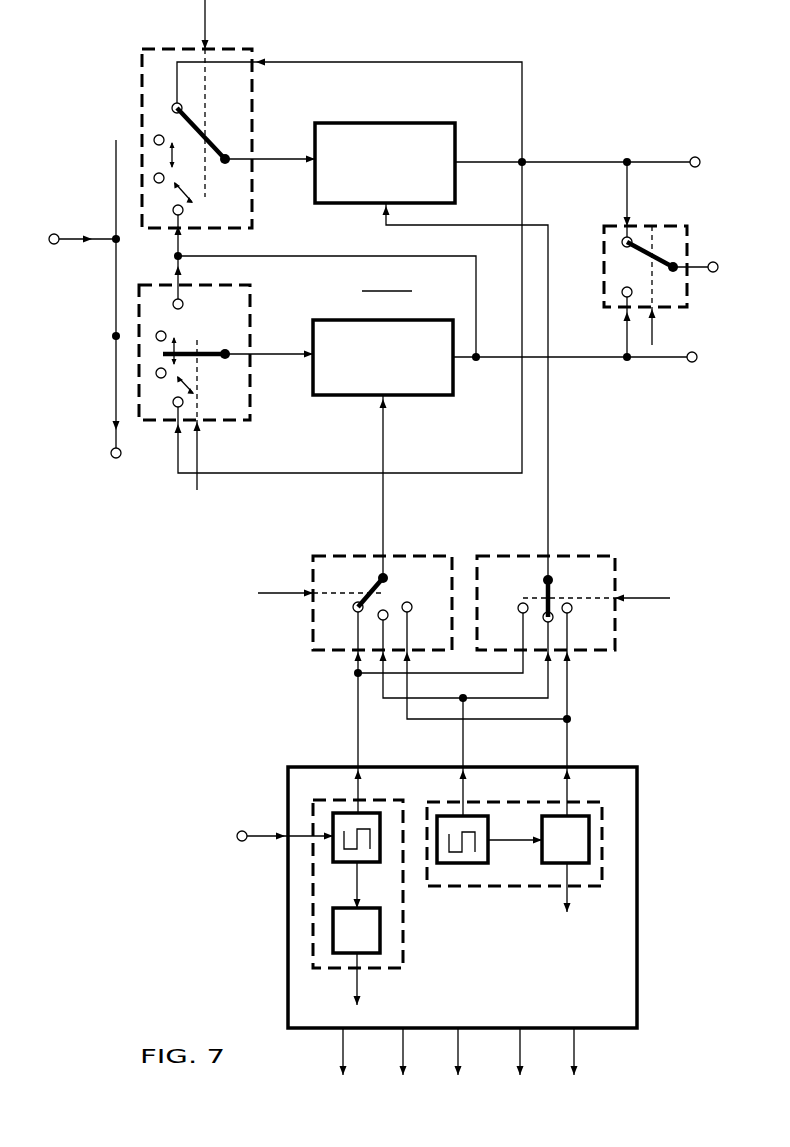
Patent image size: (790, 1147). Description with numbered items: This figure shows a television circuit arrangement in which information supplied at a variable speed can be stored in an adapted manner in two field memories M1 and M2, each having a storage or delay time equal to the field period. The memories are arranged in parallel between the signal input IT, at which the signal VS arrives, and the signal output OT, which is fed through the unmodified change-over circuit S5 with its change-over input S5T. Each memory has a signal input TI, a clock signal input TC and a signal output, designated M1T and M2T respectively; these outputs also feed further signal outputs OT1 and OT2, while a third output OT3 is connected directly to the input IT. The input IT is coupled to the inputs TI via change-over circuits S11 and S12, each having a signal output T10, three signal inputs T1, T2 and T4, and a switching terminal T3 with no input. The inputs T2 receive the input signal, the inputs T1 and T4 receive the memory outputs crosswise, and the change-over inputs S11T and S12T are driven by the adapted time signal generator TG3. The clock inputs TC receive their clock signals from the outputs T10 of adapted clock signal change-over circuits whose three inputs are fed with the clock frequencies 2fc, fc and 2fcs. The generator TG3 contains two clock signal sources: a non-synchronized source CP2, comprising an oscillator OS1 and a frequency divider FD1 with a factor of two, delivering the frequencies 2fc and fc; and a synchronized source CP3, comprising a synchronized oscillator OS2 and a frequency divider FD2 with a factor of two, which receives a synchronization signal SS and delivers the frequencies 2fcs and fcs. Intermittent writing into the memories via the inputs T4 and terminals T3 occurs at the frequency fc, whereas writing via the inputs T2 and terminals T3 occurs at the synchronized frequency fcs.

The change-over circuit S11 is at (141, 60).
The change-over input S11T is at (208, 49).
The change-over circuit S12 is at (139, 300).
The change-over input S12T is at (200, 425).
The change-over circuit S5 is at (604, 240).
The control signal for switch S5 S5T is at (655, 312).
The field memory M1 is at (372, 123).
The signal output M1T is at (455, 164).
The field memory M2 is at (416, 320).
The signal output M2T is at (453, 360).
The clock signal input TC is at (380, 209).
The signal input TI is at (305, 163).
The signal input T1 is at (253, 64).
The signal input T2 is at (154, 140).
The switching terminal T3 is at (154, 178).
The signal input T4 is at (176, 228).
The signal output T10 is at (250, 158).
The video signal diagram VS is at (84, 236).
The signal input IT is at (56, 244).
The signal output OT1 is at (695, 157).
The signal output OT2 is at (692, 362).
The signal output OT3 is at (116, 458).
The signal output OT is at (713, 272).
The synchronization signal SS is at (258, 836).
The time signal generator TG3 is at (232, 882).
The clock signal source CP2 is at (610, 995).
The clock signal source CP3 is at (410, 995).
The oscillator OS1 is at (478, 863).
The synchronized oscillator OS2 is at (374, 862).
The frequency divider FD1 is at (542, 825).
The frequency divider FD2 is at (333, 919).
The clock frequency fc is at (578, 910).
The synchronized clock frequency fcs is at (367, 1003).
The clock frequency 2fc is at (463, 772).
The clock frequency 2fcs is at (360, 772).